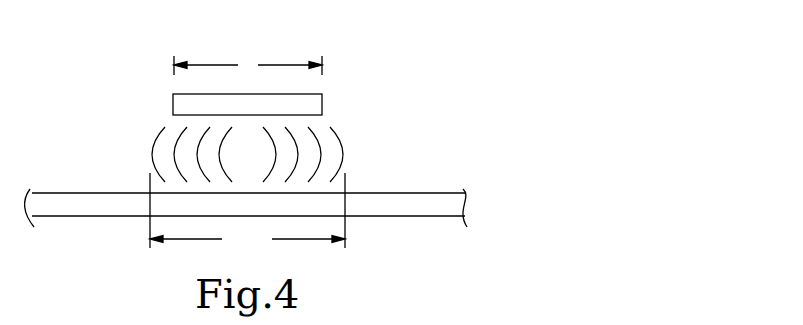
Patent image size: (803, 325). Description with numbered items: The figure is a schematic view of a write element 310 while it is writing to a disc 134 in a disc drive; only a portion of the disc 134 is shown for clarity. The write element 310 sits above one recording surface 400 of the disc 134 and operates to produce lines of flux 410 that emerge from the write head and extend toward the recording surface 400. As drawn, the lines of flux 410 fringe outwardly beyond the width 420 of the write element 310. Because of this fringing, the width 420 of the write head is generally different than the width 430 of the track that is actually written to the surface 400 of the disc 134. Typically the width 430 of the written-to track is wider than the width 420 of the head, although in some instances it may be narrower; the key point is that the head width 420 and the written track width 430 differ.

The write element 310 is at (307, 94).
The width of the write head 420 is at (248, 60).
The lines of flux 410 is at (207, 129).
The recording surface 400 is at (385, 193).
The disc 134 is at (452, 193).
The width of the written-to track 430 is at (247, 211).